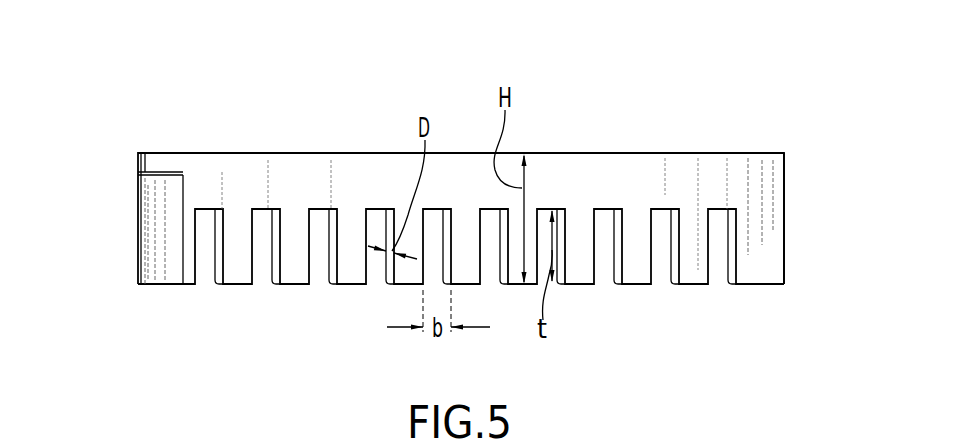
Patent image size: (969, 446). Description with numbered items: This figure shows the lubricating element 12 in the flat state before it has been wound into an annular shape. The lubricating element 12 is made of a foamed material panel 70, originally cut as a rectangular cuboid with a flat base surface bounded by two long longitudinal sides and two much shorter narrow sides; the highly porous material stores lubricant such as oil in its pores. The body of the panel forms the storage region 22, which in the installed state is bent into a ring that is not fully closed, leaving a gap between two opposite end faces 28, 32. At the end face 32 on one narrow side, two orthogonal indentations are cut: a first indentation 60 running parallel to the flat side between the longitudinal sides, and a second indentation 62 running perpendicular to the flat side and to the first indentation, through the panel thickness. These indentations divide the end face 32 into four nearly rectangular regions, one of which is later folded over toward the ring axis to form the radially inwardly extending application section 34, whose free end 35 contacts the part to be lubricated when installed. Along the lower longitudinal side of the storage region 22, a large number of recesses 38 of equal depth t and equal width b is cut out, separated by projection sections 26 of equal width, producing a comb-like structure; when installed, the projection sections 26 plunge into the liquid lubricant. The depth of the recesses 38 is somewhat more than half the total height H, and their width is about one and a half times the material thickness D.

The lubricating element 12 is at (580, 108).
The storage region 22 is at (758, 172).
The projection section 26 is at (238, 277).
The end face 28 is at (785, 228).
The end face 32 is at (140, 228).
The application section 34 is at (157, 163).
The free end 35 is at (138, 162).
The recess 38 is at (205, 277).
The first indentation 60 is at (138, 272).
The second indentation 62 is at (172, 172).
The foamed material panel 70 is at (285, 162).